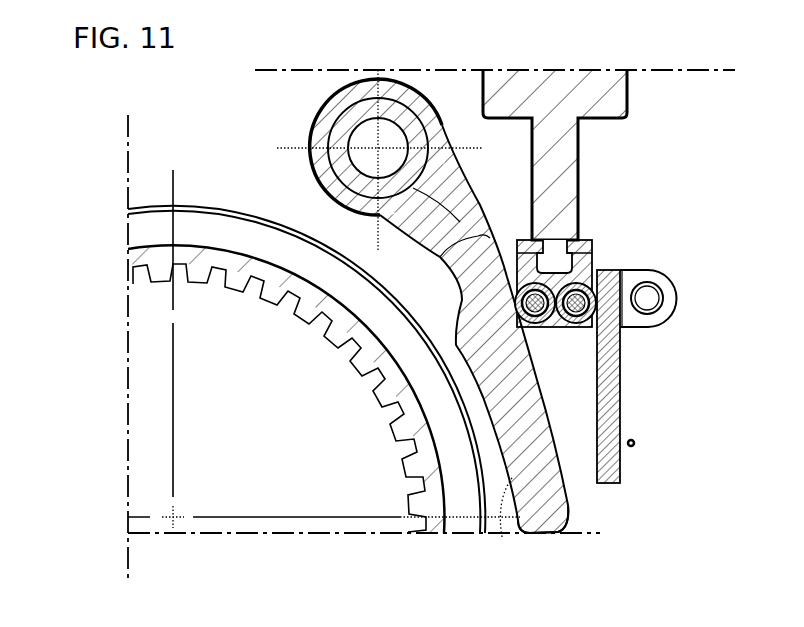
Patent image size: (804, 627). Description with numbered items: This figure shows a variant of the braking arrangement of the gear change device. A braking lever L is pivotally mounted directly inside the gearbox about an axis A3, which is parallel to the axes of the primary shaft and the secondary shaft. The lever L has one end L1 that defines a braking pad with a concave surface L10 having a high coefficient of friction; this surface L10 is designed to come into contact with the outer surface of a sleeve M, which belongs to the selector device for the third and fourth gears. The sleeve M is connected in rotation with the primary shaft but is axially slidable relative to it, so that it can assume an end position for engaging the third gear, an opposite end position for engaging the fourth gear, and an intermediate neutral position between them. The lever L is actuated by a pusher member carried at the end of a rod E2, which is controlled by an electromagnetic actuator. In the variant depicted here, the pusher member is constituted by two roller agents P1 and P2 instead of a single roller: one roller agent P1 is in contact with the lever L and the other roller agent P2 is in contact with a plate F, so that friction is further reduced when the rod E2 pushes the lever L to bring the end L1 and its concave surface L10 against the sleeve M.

The axis A3 is at (312, 122).
The sleeve M is at (247, 243).
The braking lever L is at (420, 332).
The end L1 is at (545, 505).
The concave surface L10 is at (502, 537).
The rod E2 is at (554, 145).
The roller P1 is at (548, 285).
The roller P2 is at (583, 327).
The plate F is at (620, 390).